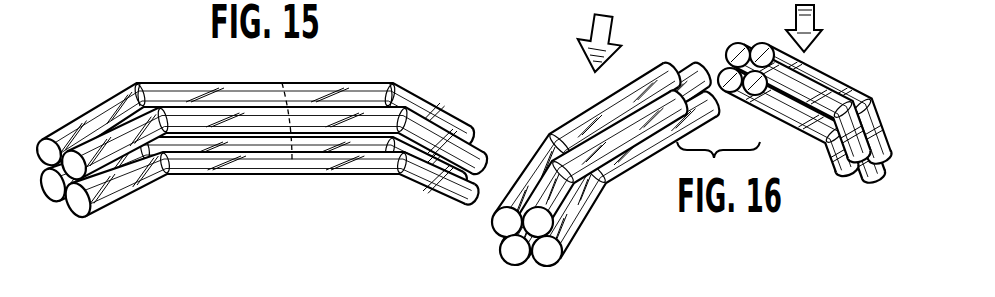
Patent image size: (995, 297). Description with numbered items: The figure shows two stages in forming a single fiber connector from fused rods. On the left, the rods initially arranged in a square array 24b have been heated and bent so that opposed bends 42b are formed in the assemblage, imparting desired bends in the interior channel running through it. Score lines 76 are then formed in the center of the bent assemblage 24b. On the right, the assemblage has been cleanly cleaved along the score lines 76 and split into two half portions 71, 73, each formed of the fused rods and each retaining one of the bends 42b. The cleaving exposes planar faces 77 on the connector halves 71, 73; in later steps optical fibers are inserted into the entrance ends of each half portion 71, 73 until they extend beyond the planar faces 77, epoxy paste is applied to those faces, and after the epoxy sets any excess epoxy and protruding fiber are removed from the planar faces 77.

In FIG. 15, the square array 24b is at (346, 70).
In FIG. 15, the bends 42b is at (162, 102).
In FIG. 15, the score lines 76 is at (300, 158).
In FIG. 16, the half portion 71 is at (660, 62).
In FIG. 16, the half portion 73 is at (763, 43).
In FIG. 16, the planar faces 77 is at (727, 44).